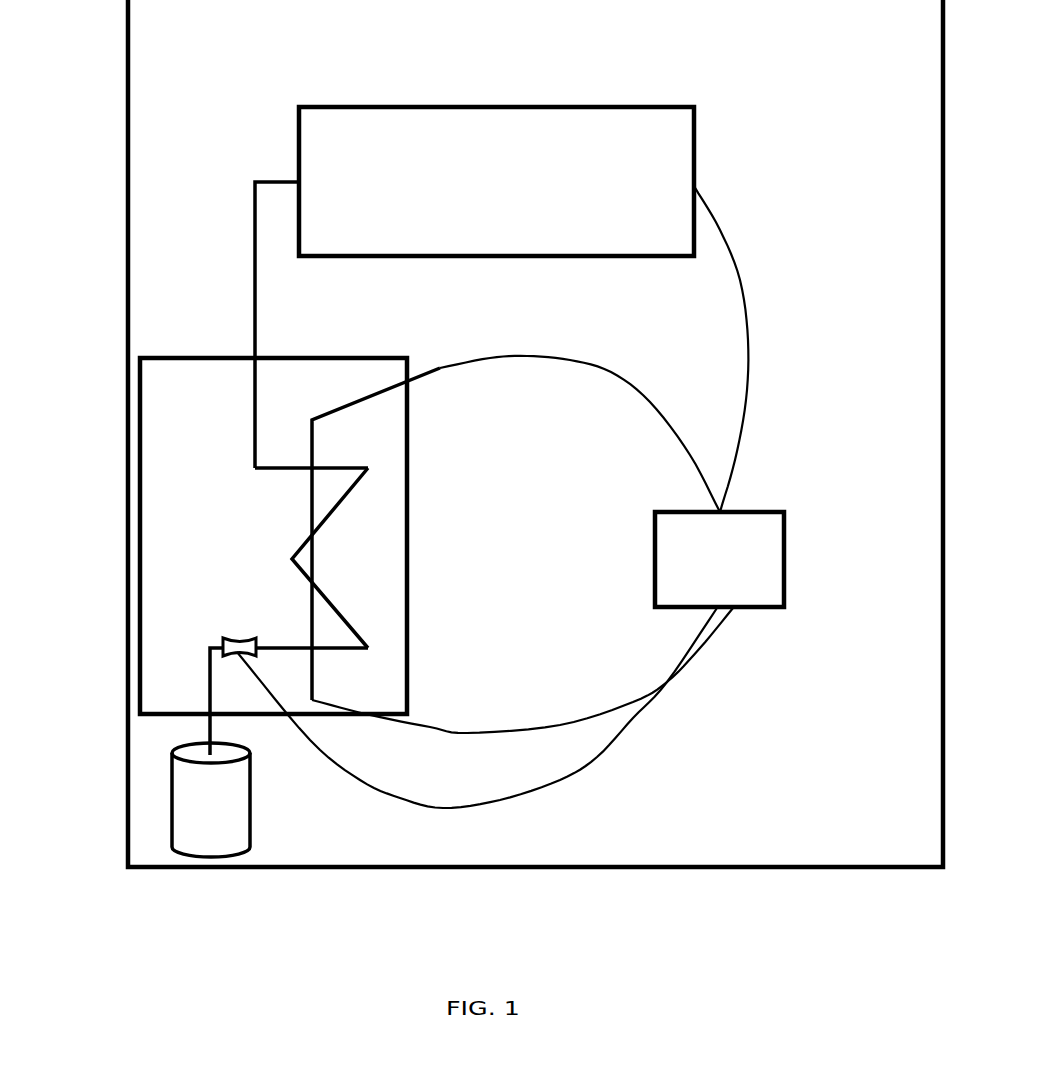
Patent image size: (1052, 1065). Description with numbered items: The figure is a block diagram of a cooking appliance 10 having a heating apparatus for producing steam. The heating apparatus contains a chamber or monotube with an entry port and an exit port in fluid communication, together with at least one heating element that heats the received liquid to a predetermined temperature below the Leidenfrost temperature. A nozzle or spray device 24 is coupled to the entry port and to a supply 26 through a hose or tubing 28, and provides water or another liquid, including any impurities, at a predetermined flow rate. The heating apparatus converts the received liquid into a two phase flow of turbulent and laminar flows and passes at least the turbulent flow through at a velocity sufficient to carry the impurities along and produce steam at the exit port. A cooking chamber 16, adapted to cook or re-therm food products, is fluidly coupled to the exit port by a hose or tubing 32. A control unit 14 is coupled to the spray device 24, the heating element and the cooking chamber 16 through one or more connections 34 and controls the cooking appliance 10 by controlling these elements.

The cooking appliance 10 is at (516, 50).
The control unit or processor 14 is at (732, 570).
The cooking chamber 16 is at (513, 190).
The nozzle or spray device 24 is at (230, 640).
The supply 26 is at (222, 820).
The hose or tubing 28 is at (208, 695).
The hose or tubing 32 is at (298, 325).
The connections 34 is at (611, 372).